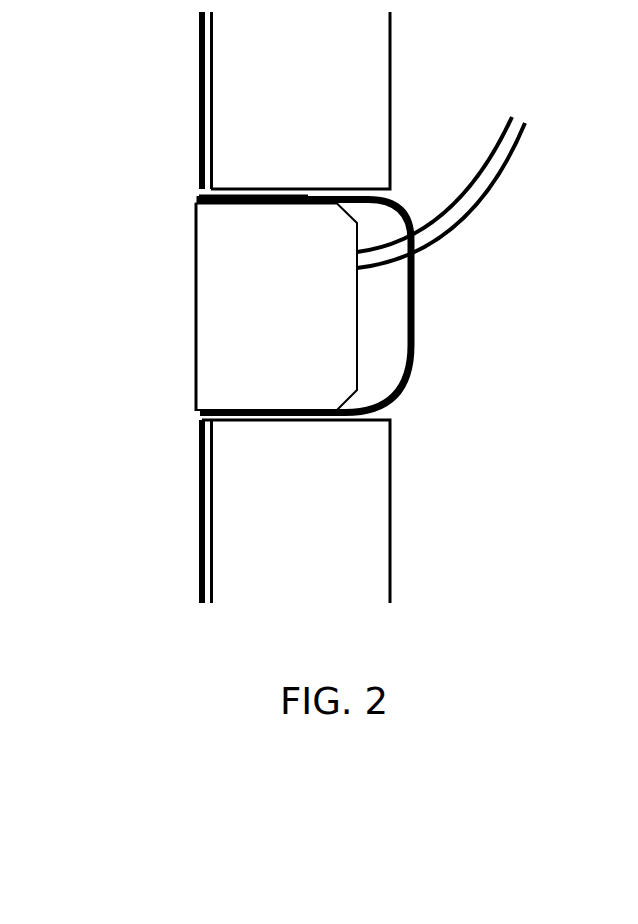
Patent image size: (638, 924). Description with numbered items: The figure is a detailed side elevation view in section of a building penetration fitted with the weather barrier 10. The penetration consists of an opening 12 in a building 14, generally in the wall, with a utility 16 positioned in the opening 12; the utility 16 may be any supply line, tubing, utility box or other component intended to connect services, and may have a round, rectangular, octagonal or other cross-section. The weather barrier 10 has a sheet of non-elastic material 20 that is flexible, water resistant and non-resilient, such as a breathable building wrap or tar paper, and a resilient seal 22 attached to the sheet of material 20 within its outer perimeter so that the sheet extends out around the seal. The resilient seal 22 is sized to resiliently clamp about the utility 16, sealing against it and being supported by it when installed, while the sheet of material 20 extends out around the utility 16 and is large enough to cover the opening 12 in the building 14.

The weather barrier 10 is at (137, 113).
The opening 12 is at (383, 195).
The building 14 is at (378, 80).
The utility 16 is at (360, 362).
The sheet of non-elastic material 20 is at (198, 167).
The resilient seal 22 is at (198, 197).